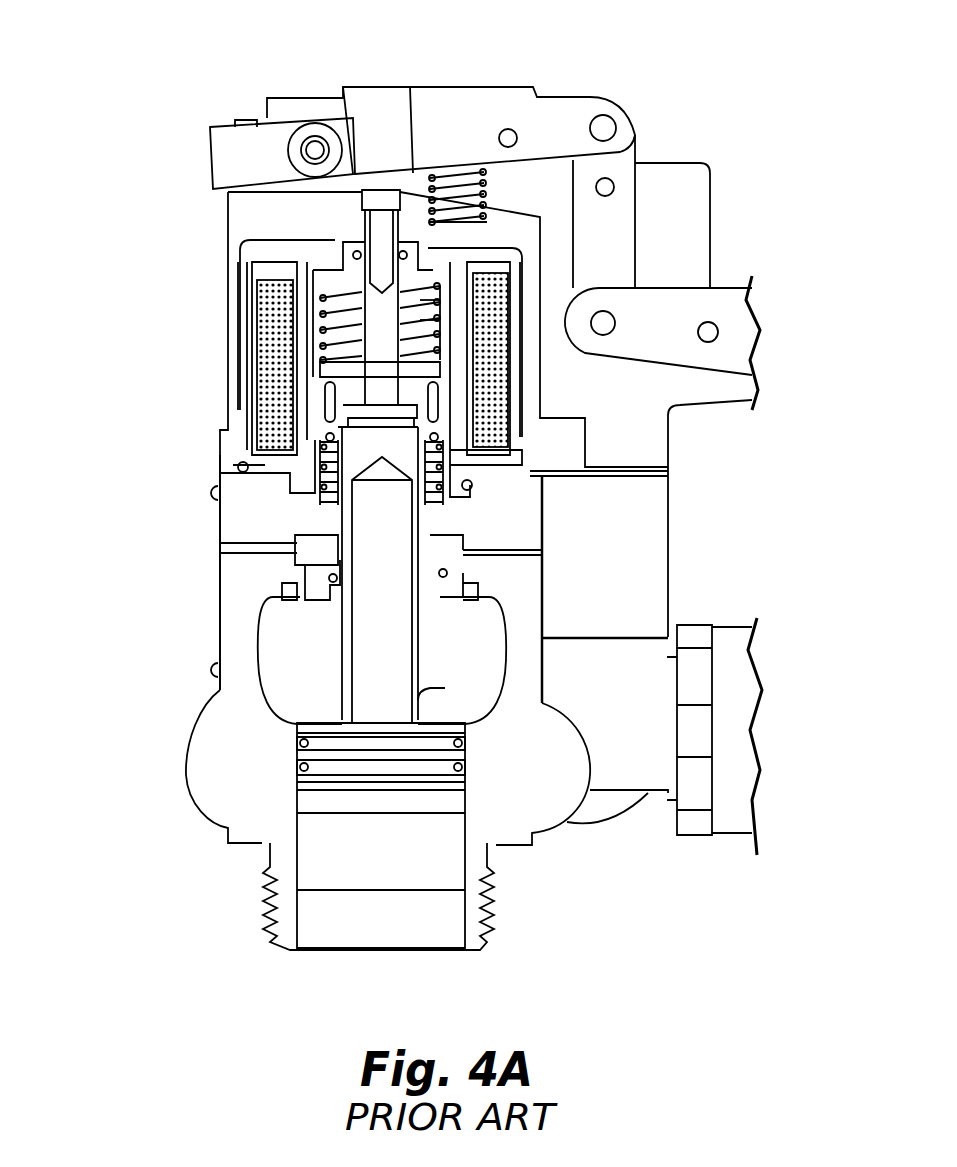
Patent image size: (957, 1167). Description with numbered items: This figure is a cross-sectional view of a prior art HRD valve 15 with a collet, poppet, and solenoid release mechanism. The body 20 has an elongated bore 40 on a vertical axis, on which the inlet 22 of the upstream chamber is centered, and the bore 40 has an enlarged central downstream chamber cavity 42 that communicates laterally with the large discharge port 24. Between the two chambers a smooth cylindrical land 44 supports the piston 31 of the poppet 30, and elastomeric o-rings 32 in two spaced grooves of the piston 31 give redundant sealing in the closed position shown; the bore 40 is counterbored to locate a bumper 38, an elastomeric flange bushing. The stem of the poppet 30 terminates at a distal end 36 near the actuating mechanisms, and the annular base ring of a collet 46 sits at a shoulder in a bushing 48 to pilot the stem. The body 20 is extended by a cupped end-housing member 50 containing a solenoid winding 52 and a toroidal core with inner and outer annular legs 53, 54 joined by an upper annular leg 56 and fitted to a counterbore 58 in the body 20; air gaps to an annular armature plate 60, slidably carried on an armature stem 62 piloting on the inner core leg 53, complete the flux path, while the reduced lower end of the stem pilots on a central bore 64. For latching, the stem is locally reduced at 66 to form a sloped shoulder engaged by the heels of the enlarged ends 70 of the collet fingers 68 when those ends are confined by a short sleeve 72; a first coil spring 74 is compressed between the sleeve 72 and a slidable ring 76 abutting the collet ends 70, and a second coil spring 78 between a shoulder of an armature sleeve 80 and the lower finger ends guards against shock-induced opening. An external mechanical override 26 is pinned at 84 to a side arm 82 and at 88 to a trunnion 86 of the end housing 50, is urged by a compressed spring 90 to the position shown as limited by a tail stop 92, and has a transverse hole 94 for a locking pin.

The valve 15 is at (188, 520).
The body 20 is at (232, 605).
The inlet 22 is at (404, 950).
The discharge port 24 is at (762, 674).
The mechanical override 26 is at (594, 76).
The poppet 30 is at (438, 692).
The piston 31 is at (300, 780).
The o-rings 32 is at (300, 769).
The distal end 36 is at (352, 455).
The bumper 38 is at (318, 572).
The bore 40 is at (310, 538).
The downstream chamber cavity 42 is at (277, 652).
The land 44 is at (440, 530).
The collet 46 is at (422, 575).
The bushing 48 is at (445, 558).
The end-housing member 50 is at (228, 321).
The solenoid winding 52 is at (265, 365).
The inner core leg 53 is at (247, 395).
The outer core leg 54 is at (302, 280).
The upper annular leg 56 is at (240, 467).
The counterbore 58 is at (466, 497).
The armature plate 60 is at (248, 244).
The armature stem 62 is at (325, 275).
The central bore 64 is at (370, 222).
The reduction 66 is at (428, 400).
The collet fingers 68 is at (440, 520).
The collet ends 70 is at (450, 570).
The sleeve 72 is at (435, 388).
The first coil spring 74 is at (470, 452).
The ring 76 is at (436, 440).
The second coil spring 78 is at (440, 320).
The armature sleeve 80 is at (440, 300).
The side arm 82 is at (752, 306).
The pin 84 is at (603, 323).
The trunnion 86 is at (320, 105).
The pin 88 is at (313, 148).
The spring 90 is at (463, 190).
The tail stop 92 is at (240, 120).
The transverse hole 94 is at (508, 129).